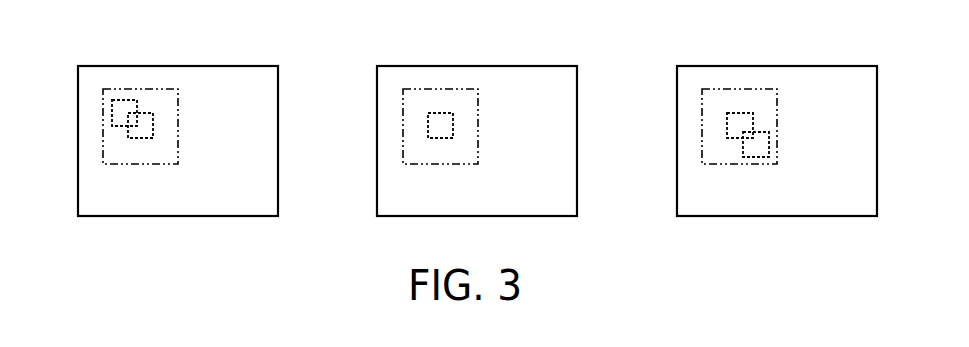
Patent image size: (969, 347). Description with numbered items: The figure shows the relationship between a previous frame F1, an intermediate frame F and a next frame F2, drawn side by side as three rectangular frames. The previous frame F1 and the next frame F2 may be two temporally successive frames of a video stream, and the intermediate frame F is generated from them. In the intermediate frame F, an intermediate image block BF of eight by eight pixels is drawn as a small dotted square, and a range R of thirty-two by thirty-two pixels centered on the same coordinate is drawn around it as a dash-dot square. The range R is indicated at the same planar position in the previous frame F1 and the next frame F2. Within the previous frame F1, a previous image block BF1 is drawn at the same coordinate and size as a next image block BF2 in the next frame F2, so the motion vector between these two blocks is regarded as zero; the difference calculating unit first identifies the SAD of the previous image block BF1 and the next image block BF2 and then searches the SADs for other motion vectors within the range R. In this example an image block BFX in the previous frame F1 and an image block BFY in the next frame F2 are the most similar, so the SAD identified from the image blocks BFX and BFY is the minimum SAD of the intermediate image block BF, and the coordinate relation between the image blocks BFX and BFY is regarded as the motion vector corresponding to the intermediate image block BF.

The range R is at (138, 89).
The previous frame F1 is at (178, 157).
The intermediate frame F is at (477, 157).
The next frame F2 is at (777, 157).
The image block BFX is at (112, 116).
The previous image block BF1 is at (128, 138).
The intermediate image block BF is at (428, 138).
The next image block BF2 is at (727, 138).
The image block BFY is at (760, 157).